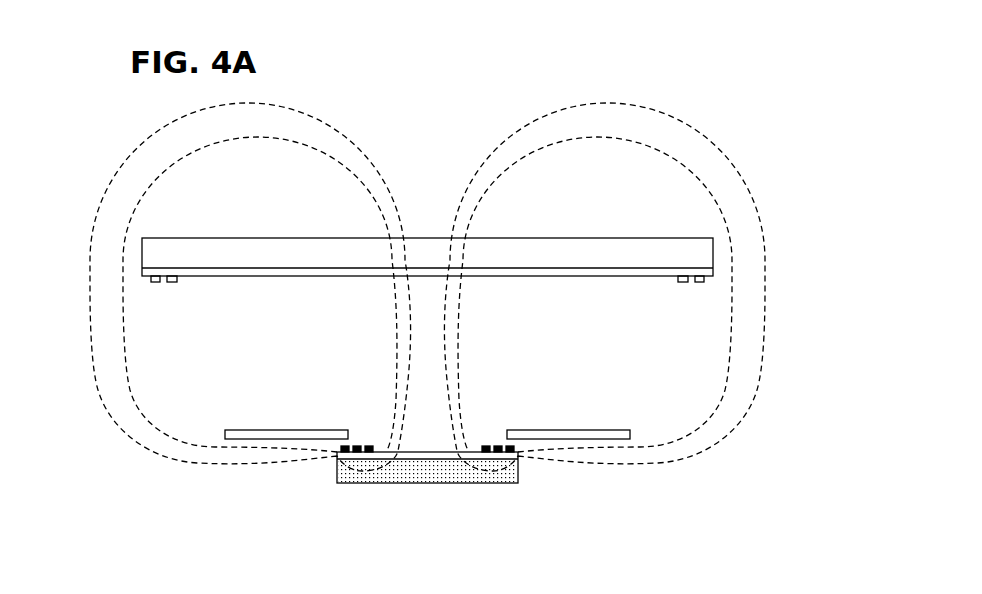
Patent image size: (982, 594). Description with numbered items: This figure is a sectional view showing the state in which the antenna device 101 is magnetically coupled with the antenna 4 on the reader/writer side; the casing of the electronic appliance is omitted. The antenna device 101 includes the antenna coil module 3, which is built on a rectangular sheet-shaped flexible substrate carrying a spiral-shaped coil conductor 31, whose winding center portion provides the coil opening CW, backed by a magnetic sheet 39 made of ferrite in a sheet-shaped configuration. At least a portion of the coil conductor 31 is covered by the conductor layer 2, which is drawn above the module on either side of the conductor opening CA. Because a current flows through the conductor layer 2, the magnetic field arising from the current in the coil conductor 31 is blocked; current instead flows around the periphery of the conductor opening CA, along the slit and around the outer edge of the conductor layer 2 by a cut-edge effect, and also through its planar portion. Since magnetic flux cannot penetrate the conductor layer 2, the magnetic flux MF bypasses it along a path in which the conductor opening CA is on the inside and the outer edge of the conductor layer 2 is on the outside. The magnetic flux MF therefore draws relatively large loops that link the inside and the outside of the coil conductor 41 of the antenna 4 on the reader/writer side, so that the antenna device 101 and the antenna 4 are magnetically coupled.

The antenna device 101 is at (156, 503).
The antenna 4 is at (430, 287).
The coil conductor 41 is at (156, 282).
The conductor layer 2 is at (280, 428).
The antenna coil module 3 is at (456, 459).
The coil conductor 31 is at (343, 446).
The magnetic sheet 39 is at (432, 475).
The magnetic flux MF is at (102, 388).
The coil opening CW is at (427, 445).
The conductor opening CA is at (502, 425).